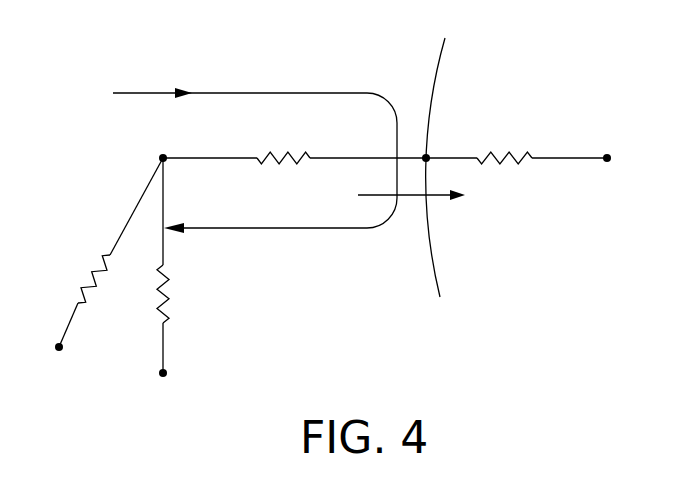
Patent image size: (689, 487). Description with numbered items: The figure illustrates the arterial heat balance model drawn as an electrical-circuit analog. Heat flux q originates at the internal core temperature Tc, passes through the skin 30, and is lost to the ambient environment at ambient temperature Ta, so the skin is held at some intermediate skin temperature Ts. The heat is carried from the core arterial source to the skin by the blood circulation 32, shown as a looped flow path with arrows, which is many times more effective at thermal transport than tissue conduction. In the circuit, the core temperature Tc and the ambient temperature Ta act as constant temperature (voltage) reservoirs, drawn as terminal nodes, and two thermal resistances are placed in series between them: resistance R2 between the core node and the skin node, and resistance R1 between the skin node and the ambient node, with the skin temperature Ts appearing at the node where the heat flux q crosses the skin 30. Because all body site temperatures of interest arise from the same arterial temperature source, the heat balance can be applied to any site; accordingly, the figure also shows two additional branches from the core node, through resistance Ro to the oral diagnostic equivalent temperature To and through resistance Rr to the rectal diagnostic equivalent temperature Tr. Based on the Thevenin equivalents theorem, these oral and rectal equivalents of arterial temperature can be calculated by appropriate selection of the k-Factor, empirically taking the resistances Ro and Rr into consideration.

The skin 30 is at (433, 258).
The blood circulation 32 is at (313, 93).
The resistance R1 is at (516, 176).
The resistance R2 is at (294, 176).
The resistance Ro is at (104, 252).
The resistance Rr is at (180, 265).
The internal core temperature Tc is at (140, 156).
The skin temperature Ts is at (437, 144).
The ambient temperature Ta is at (605, 144).
The oral diagnostic equivalent temperature To is at (47, 364).
The rectal diagnostic equivalent temperature Tr is at (162, 390).
The heat flux q is at (420, 196).